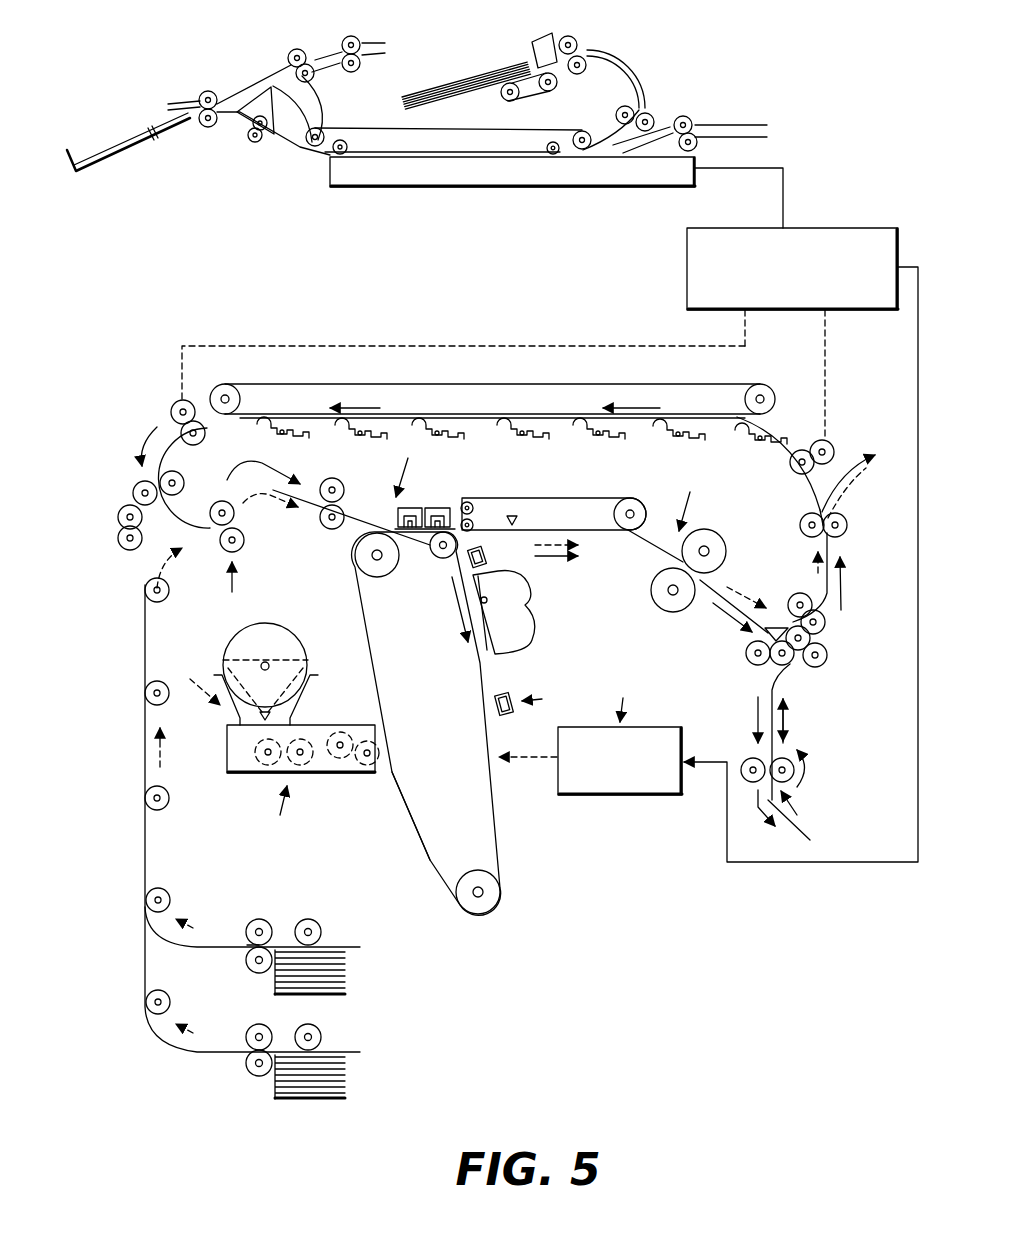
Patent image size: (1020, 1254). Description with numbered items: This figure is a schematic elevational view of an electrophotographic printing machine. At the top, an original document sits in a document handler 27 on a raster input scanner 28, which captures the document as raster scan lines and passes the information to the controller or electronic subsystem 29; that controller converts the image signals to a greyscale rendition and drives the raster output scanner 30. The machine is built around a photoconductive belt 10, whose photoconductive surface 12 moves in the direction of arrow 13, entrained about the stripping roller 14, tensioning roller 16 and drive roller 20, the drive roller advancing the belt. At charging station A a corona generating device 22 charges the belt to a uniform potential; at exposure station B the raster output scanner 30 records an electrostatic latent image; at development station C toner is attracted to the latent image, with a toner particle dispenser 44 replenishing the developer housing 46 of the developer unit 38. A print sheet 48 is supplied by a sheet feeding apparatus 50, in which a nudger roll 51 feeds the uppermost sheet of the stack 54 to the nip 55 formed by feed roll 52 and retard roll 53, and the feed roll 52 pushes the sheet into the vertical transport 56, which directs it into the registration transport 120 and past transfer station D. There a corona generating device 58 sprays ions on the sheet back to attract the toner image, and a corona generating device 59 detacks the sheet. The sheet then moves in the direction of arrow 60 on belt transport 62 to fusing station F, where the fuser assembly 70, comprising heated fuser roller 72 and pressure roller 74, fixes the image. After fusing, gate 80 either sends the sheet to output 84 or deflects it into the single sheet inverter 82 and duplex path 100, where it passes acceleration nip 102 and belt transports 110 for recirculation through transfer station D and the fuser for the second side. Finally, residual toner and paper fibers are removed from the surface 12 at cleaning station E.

The photoconductive belt 10 is at (500, 845).
The photoconductive surface 12 is at (425, 860).
The arrow 13 is at (462, 623).
The stripping roller 14 is at (440, 558).
The tensioning roller 16 is at (354, 557).
The drive roller 20 is at (479, 915).
The corona generating device 22 is at (512, 693).
The document handler 27 is at (673, 47).
The raster input scanner 28 is at (453, 189).
The controller or electronic subsystem 29 is at (687, 280).
The raster output scanner 30 is at (628, 796).
The developer unit 38 is at (170, 674).
The toner particle dispenser 44 is at (292, 640).
The developer housing 46 is at (347, 774).
The print sheet 48 is at (167, 753).
The sheet feeding apparatus 50 is at (128, 771).
The nudger roll 51 is at (310, 920).
The feed roll 52 is at (262, 920).
The retard roll 53 is at (250, 970).
The stack 54 is at (332, 997).
The nip 55 is at (247, 942).
The vertical transport 56 is at (143, 870).
The corona generating device 58 is at (417, 508).
The corona generating device 59 is at (442, 508).
The arrow 60 is at (576, 554).
The belt transport 62 is at (610, 497).
The fuser assembly 70 is at (647, 617).
The heated fuser roller 72 is at (667, 613).
The pressure roller 74 is at (722, 532).
The gate 80 is at (752, 640).
The single sheet inverter 82 is at (833, 673).
The output 84 is at (877, 455).
The duplex path 100 is at (532, 340).
The acceleration nip 102 is at (172, 406).
The belt transports 110 is at (287, 383).
The registration transport 120 is at (352, 503).
The charging station A is at (544, 700).
The exposure station B is at (619, 695).
The development station C is at (270, 849).
The transfer station D is at (404, 457).
The cleaning station E is at (541, 587).
The fusing station F is at (689, 482).